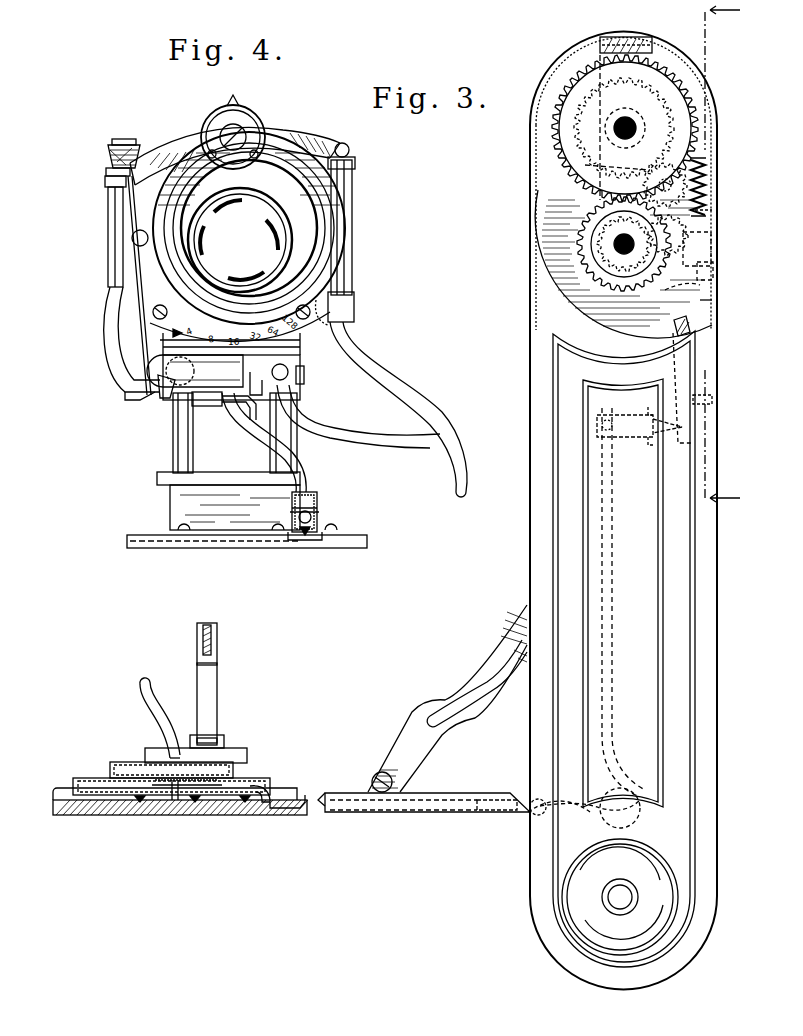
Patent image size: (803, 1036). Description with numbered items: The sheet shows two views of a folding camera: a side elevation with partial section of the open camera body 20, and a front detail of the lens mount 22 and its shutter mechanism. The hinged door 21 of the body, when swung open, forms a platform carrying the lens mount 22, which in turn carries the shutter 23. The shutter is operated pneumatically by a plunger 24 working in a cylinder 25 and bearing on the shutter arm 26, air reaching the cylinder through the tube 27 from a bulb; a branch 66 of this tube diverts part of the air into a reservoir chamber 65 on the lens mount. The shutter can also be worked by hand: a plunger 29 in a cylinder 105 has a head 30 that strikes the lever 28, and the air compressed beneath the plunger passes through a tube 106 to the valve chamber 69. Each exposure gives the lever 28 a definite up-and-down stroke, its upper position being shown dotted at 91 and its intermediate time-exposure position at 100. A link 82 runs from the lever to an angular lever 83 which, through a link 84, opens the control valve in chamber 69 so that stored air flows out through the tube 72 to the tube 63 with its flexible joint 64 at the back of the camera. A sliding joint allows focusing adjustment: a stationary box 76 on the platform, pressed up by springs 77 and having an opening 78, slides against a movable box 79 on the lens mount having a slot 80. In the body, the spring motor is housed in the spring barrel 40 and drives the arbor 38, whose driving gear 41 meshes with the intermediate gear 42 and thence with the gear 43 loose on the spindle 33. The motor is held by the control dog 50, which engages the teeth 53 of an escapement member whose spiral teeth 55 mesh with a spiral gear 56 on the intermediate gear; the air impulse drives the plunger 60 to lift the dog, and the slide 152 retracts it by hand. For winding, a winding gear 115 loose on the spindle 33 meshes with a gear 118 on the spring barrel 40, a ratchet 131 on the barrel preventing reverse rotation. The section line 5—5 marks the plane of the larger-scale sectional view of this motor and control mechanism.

In FIG. 3, the camera body 20 is at (712, 595).
In FIG. 4, the hinged door 21 is at (178, 548).
In FIG. 4, the lens mount 22 is at (215, 644).
In FIG. 4, the shutter 23 is at (272, 224).
In FIG. 4, the plunger 24 is at (354, 178).
In FIG. 4, the cylinder 25 is at (355, 273).
In FIG. 4, the shutter arm 26 is at (292, 142).
In FIG. 4, the tube 27 is at (442, 452).
In FIG. 4, the lever 28 is at (137, 162).
In FIG. 4, the plunger 29 is at (108, 174).
In FIG. 4, the head 30 is at (116, 143).
In FIG. 3, the spindle 33 is at (627, 126).
In FIG. 3, the arbor 38 is at (622, 248).
In FIG. 3, the spring barrel 40 is at (560, 278).
In FIG. 3, the driving gear 41 is at (702, 288).
In FIG. 3, the intermediate gear 42 is at (712, 224).
In FIG. 3, the gear 43 is at (672, 105).
In FIG. 3, the dog 50 is at (693, 330).
In FIG. 3, the teeth 53 is at (716, 245).
In FIG. 3, the spiral teeth 55 is at (708, 192).
In FIG. 3, the spiral gear 56 is at (670, 180).
In FIG. 3, the plunger 60 is at (632, 437).
In FIG. 3, the tube 63 is at (610, 625).
In FIG. 4, the tube 63 is at (288, 800).
In FIG. 3, the flexible joint 64 is at (630, 795).
In FIG. 4, the reservoir chamber 65 is at (286, 371).
In FIG. 4, the branch 66 is at (322, 432).
In FIG. 4, the valve chamber 69 is at (180, 400).
In FIG. 4, the tube 72 is at (265, 437).
In FIG. 4, the stationary box 76 is at (310, 538).
In FIG. 4, the springs 77 is at (304, 538).
In FIG. 4, the opening 78 is at (318, 520).
In FIG. 4, the movable box 79 is at (316, 496).
In FIG. 4, the slot 80 is at (320, 510).
In FIG. 4, the link 82 is at (128, 226).
In FIG. 4, the angular lever 83 is at (166, 385).
In FIG. 4, the link 84 is at (205, 407).
In FIG. 4, the upper dotted line position 91 is at (110, 152).
In FIG. 4, the intermediate position 100 is at (108, 162).
In FIG. 4, the cylinder 105 is at (108, 270).
In FIG. 4, the tube 106 is at (112, 328).
In FIG. 3, the winding gear 115 is at (555, 142).
In FIG. 3, the gear 118 is at (580, 238).
In FIG. 3, the ratchet 131 is at (562, 215).
In FIG. 3, the slide 152 is at (690, 326).
In FIG. 3, the section line 5 is at (733, 255).